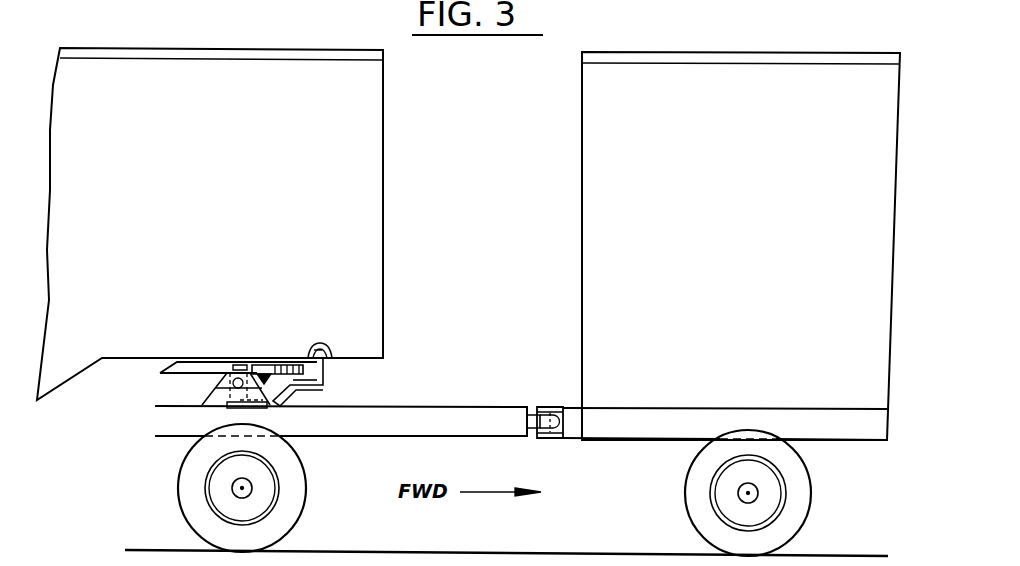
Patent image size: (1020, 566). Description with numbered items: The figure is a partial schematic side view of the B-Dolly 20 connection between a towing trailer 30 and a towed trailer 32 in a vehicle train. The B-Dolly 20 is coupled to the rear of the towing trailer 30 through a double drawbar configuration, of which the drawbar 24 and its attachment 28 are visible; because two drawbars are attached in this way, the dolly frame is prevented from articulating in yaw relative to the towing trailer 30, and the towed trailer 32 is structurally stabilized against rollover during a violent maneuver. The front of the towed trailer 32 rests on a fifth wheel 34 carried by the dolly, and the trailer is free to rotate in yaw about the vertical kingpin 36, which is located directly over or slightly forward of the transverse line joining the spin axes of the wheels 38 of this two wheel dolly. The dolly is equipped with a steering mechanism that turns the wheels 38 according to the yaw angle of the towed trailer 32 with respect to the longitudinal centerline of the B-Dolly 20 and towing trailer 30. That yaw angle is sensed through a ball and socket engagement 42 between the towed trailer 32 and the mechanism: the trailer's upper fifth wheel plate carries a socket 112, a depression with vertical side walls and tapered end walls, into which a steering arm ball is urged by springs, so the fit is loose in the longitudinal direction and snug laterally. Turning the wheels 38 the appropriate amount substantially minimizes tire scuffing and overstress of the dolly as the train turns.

The B-Dolly 20 is at (487, 278).
The drawbar 24 is at (477, 407).
The drawbar attachment 28 is at (552, 410).
The towing trailer 30 is at (723, 53).
The towed trailer 32 is at (290, 52).
The fifth wheel 34 is at (187, 366).
The kingpin 36 is at (243, 362).
The wheels 38 is at (293, 493).
The ball and socket engagement 42 is at (315, 350).
The socket 112 is at (333, 348).